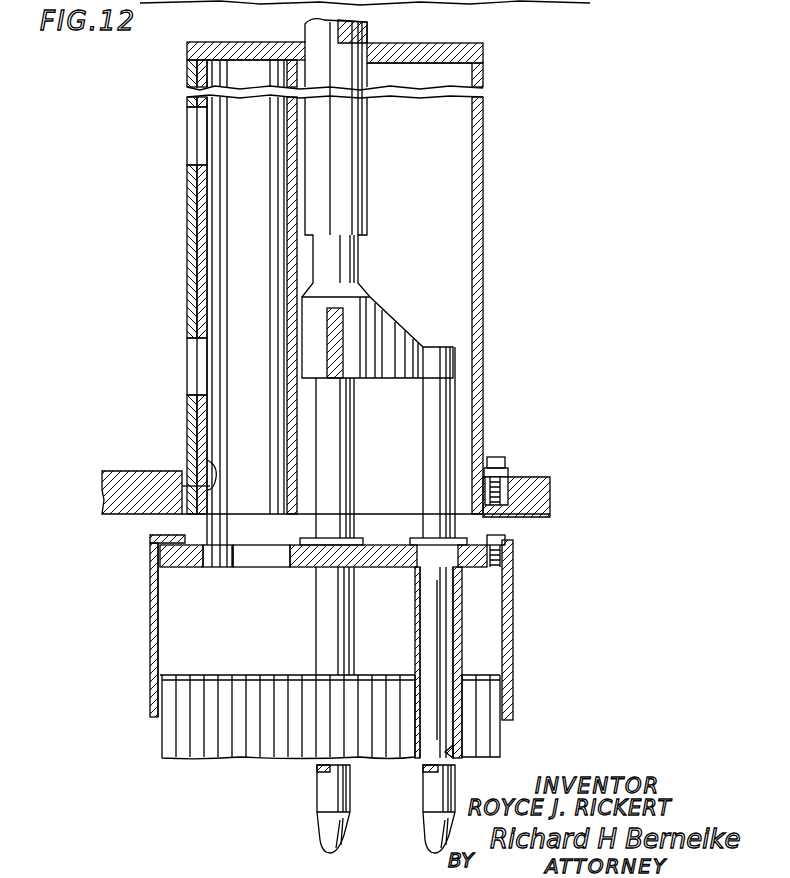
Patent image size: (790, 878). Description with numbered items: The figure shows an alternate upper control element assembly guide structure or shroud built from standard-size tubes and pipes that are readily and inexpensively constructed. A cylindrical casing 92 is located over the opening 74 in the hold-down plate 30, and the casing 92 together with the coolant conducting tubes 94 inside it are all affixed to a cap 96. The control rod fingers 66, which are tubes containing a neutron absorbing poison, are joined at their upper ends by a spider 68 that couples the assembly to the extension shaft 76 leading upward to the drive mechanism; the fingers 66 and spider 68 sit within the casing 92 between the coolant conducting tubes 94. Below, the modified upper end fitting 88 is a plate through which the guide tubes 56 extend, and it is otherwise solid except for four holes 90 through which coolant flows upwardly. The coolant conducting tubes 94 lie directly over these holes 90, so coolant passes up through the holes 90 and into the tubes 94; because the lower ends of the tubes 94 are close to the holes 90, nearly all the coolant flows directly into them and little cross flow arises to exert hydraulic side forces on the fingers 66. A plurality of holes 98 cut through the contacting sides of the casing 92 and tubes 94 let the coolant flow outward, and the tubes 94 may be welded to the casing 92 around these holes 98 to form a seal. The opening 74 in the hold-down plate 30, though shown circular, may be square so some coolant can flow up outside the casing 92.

The hold-down plate 30 is at (527, 480).
The guide tubes 56 is at (327, 623).
The control rod fingers 66 is at (443, 390).
The spider 68 is at (392, 325).
The opening in hold-down plate 74 is at (207, 465).
The control element assembly extension shaft 76 is at (352, 45).
The upper end fitting 88 is at (305, 567).
The holes 90 is at (245, 567).
The cylindrical casing 92 is at (483, 186).
The coolant conducting tubes 94 is at (226, 200).
The cap 96 is at (483, 52).
The holes 98 is at (193, 126).